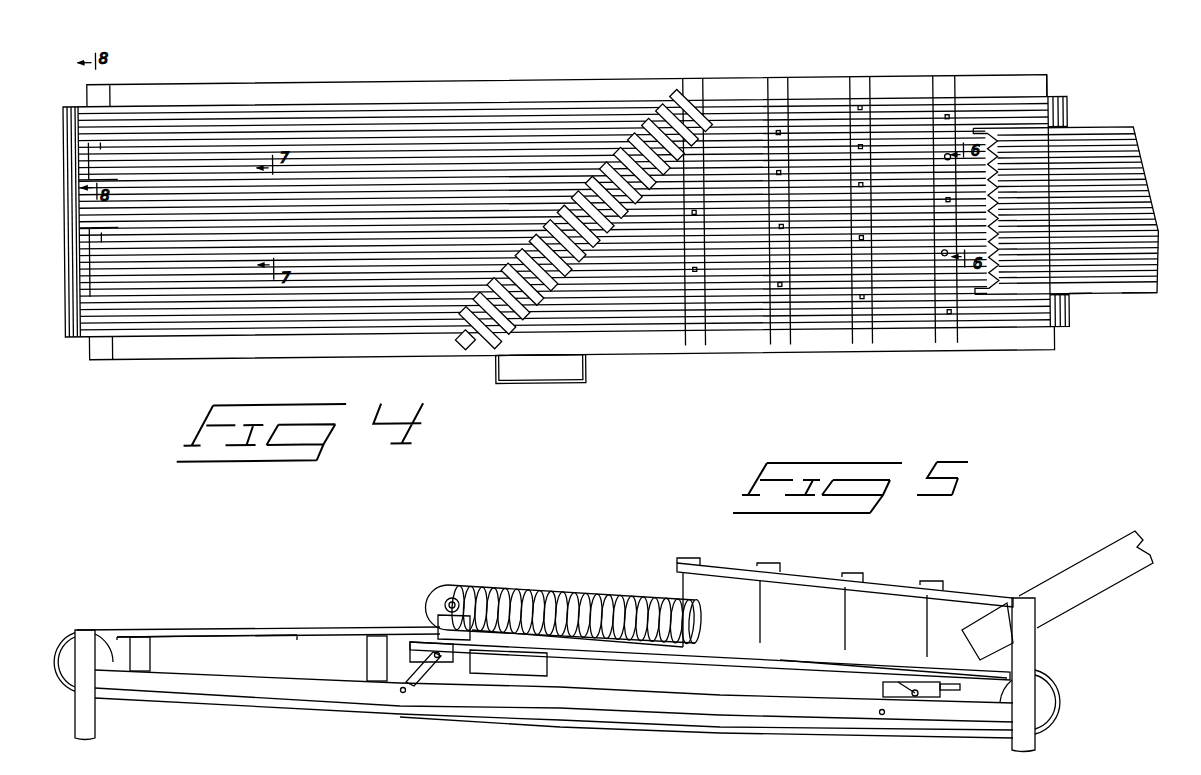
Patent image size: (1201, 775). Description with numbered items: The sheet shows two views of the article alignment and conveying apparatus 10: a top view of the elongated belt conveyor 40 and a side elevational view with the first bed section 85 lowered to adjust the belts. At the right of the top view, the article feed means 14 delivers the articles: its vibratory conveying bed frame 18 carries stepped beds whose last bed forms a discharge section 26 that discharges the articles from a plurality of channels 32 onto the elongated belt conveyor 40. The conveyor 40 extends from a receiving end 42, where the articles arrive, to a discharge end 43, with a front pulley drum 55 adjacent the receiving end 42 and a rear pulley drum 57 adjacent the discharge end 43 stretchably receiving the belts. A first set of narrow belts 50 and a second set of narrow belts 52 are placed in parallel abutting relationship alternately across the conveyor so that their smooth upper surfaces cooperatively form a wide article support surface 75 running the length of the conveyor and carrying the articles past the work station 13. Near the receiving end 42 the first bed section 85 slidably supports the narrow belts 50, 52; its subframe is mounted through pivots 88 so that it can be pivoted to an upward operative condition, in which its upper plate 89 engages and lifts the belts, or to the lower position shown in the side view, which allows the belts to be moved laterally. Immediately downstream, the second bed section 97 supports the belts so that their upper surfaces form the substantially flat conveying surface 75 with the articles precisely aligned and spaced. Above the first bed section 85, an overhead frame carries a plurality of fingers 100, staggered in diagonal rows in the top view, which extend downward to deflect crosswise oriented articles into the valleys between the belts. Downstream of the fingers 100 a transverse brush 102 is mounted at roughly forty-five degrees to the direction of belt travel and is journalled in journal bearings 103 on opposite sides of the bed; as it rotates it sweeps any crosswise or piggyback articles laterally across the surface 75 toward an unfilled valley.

In FIG. 4, the article alignment and conveying apparatus 10 is at (1062, 74).
In FIG. 4, the work station 13 is at (252, 104).
In FIG. 5, the work station 13 is at (245, 613).
In FIG. 4, the article feed means 14 is at (1118, 138).
In FIG. 4, the vibratory conveying bed frame 18 is at (1130, 306).
In FIG. 5, the vibratory conveying bed frame 18 is at (1110, 580).
In FIG. 4, the discharge section 26 is at (1085, 305).
In FIG. 5, the discharge section 26 is at (989, 630).
In FIG. 4, the channels 32 is at (1133, 175).
In FIG. 4, the elongated belt conveyor 40 is at (742, 83).
In FIG. 5, the elongated belt conveyor 40 is at (707, 718).
In FIG. 5, the receiving end 42 is at (1047, 727).
In FIG. 5, the discharge end 43 is at (47, 672).
In FIG. 4, the first set of narrow belts 50 is at (1063, 108).
In FIG. 4, the second set of narrow belts 52 is at (1069, 119).
In FIG. 5, the front pulley drum 55 is at (1040, 702).
In FIG. 5, the rear pulley drum 57 is at (74, 645).
In FIG. 4, the article support surface 75 is at (385, 129).
In FIG. 5, the first bed section 85 is at (733, 662).
In FIG. 5, the pivots 88 is at (425, 678).
In FIG. 5, the upper plate 89 is at (817, 668).
In FIG. 5, the second bed section 97 is at (298, 636).
In FIG. 4, the fingers 100 is at (947, 127).
In FIG. 5, the fingers 100 is at (843, 618).
In FIG. 4, the transverse brush 102 is at (638, 126).
In FIG. 5, the transverse brush 102 is at (587, 593).
In FIG. 4, the journal bearings 103 is at (462, 356).
In FIG. 5, the journal bearings 103 is at (457, 597).